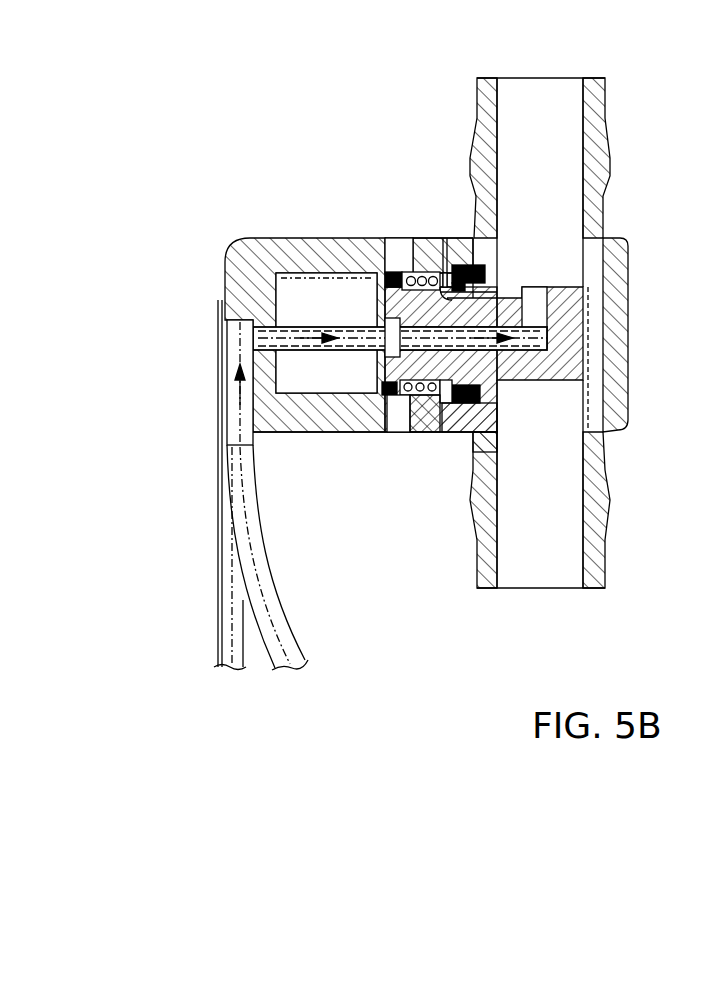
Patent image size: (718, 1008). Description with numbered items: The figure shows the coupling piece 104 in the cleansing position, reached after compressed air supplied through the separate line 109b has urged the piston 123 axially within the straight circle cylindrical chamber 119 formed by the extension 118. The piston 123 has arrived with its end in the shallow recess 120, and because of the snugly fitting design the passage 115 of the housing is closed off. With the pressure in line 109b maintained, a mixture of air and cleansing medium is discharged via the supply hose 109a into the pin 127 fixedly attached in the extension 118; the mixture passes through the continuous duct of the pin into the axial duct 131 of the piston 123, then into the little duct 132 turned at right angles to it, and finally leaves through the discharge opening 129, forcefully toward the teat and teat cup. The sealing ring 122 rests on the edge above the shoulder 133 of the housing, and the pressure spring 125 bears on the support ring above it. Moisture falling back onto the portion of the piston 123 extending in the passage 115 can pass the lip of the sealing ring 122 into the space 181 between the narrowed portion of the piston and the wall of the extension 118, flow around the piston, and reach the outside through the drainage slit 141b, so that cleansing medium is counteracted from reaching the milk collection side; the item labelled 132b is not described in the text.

The coupling piece 104 is at (406, 392).
The supply hose 109a is at (285, 628).
The separate line 109b is at (218, 582).
The passage 115 is at (560, 117).
The extension 118 is at (238, 248).
The chamber 119 is at (315, 290).
The shallow recess 120 is at (585, 337).
The sealing ring 122 is at (465, 262).
The piston 123 is at (618, 424).
The pressure spring 125 is at (402, 273).
The pin 127 is at (350, 337).
The discharge opening 129 is at (543, 283).
The duct 131 is at (493, 347).
The little duct 132 is at (586, 303).
The lower seal seat 132b is at (434, 430).
The shoulder 133 is at (497, 447).
The drainage slit 141b is at (393, 417).
The space 181 is at (418, 270).